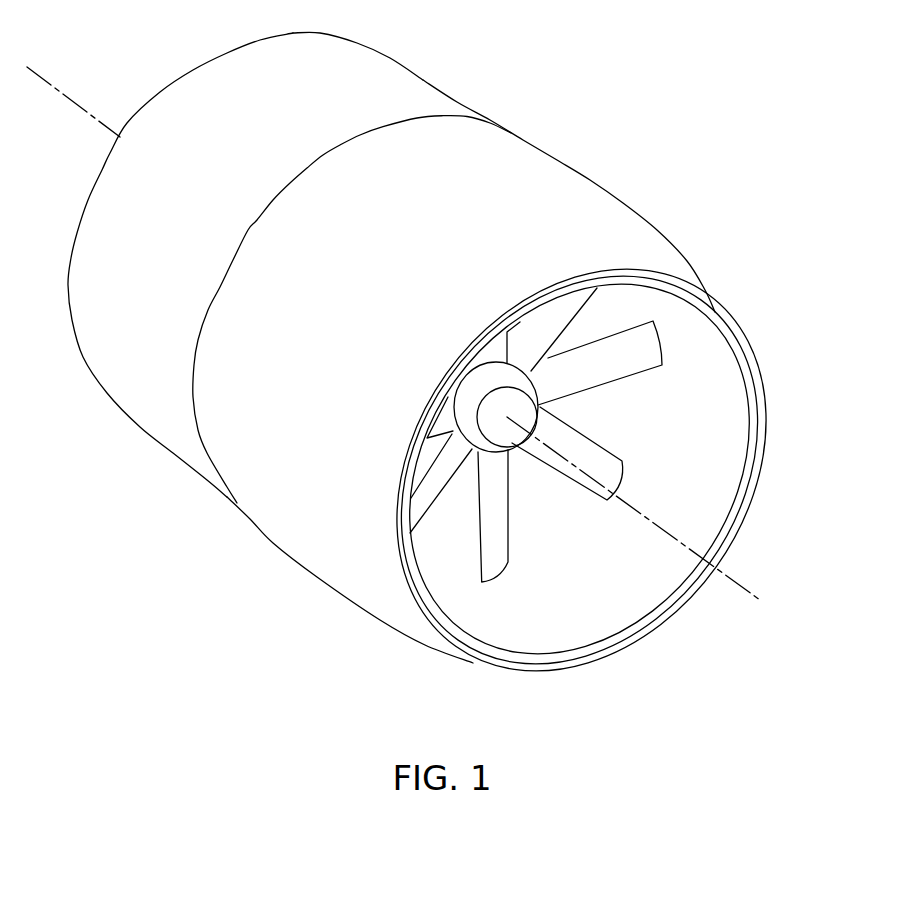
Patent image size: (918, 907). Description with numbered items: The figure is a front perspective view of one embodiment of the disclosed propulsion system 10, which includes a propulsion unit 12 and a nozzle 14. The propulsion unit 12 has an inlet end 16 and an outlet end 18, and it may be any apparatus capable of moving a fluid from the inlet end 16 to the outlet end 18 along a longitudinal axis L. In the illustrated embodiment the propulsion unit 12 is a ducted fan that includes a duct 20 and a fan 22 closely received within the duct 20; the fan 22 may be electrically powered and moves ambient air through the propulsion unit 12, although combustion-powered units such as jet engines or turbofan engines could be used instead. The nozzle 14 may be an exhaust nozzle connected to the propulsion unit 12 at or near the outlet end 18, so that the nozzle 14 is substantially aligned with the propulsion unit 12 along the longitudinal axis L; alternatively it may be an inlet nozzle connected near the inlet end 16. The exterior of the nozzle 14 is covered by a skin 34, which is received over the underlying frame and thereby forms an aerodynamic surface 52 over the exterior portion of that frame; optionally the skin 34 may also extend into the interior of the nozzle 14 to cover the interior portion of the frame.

The propulsion system 10 is at (628, 113).
The propulsion unit 12 is at (608, 207).
The nozzle 14 is at (377, 70).
The inlet end 16 is at (764, 330).
The outlet end 18 is at (520, 128).
The duct 20 is at (293, 529).
The fan 22 is at (612, 368).
The skin 34 is at (107, 203).
The aerodynamic surface 52 is at (178, 221).
The longitudinal axis L is at (745, 590).